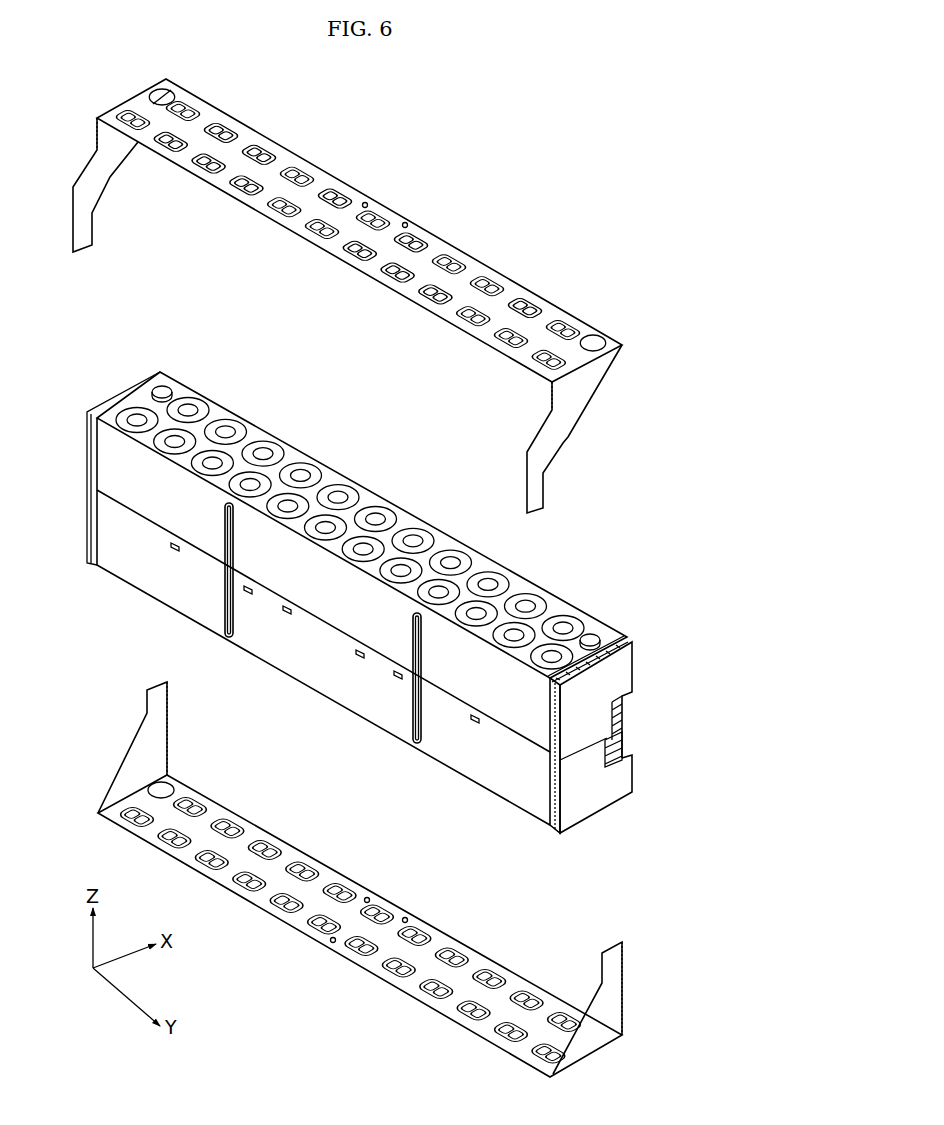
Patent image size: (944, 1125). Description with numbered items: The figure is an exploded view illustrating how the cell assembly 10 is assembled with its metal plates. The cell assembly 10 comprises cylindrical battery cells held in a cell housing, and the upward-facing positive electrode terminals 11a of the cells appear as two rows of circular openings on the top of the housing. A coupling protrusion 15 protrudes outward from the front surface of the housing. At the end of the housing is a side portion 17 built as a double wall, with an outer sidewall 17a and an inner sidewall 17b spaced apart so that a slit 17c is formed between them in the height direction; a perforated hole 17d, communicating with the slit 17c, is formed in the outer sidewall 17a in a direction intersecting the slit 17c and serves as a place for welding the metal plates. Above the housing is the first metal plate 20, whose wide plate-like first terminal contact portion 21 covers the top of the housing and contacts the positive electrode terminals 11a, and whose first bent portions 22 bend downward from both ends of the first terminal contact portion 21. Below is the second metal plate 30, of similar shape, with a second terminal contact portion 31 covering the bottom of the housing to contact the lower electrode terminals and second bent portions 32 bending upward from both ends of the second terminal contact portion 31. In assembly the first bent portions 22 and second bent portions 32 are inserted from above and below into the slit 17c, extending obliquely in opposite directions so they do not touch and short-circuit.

The cell assembly 10 is at (394, 487).
The positive electrode terminal 11a is at (525, 605).
The coupling protrusion 15 is at (413, 723).
The side portion 17 is at (607, 787).
The outer sidewall 17a is at (622, 672).
The inner sidewall 17b is at (622, 713).
The slit 17c is at (607, 647).
The perforated hole 17d is at (625, 742).
The first metal plate 20 is at (410, 186).
The first terminal contact portion 21 is at (440, 245).
The first bent portion 22 is at (88, 170).
The second metal plate 30 is at (408, 885).
The second terminal contact portion 31 is at (440, 943).
The second bent portion 32 is at (138, 758).